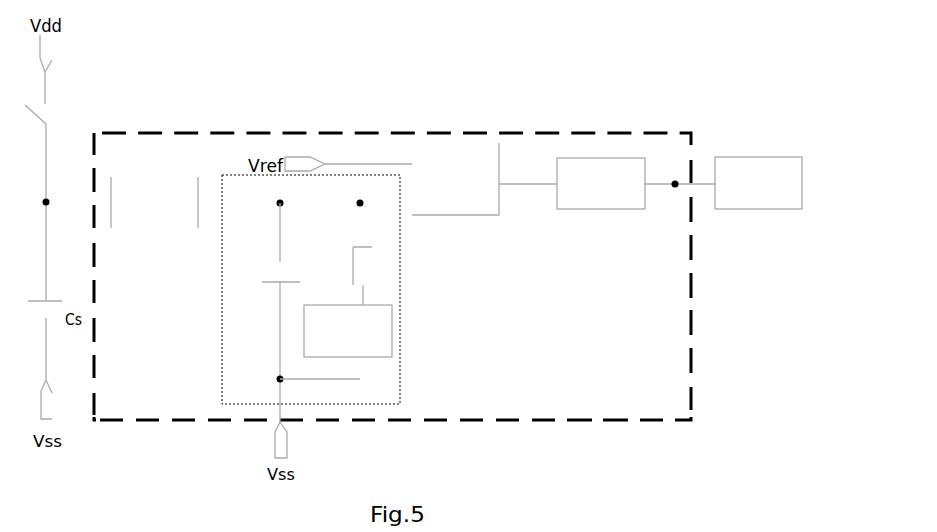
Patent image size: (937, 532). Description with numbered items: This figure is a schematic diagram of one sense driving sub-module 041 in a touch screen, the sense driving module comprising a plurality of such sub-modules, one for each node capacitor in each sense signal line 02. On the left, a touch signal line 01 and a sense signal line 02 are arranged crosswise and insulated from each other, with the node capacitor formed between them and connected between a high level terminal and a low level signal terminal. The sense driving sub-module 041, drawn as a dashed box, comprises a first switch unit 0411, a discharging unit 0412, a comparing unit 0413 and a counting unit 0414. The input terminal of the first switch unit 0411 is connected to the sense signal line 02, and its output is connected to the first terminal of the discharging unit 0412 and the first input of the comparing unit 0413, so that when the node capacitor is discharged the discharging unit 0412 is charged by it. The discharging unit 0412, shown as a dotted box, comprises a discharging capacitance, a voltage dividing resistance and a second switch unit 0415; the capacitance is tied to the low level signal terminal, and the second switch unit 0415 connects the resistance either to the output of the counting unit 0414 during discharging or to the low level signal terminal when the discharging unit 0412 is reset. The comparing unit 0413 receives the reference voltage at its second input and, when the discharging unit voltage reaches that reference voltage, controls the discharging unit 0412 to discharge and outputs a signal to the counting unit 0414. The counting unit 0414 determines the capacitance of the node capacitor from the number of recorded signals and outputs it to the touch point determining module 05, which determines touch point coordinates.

The touch signal line 01 is at (45, 273).
The sense signal line 02 is at (57, 202).
The sense driving sub-module 041 is at (588, 421).
The first switch unit 0411 is at (157, 178).
The discharging unit 0412 is at (344, 329).
The comparing unit 0413 is at (460, 143).
The counting unit 0414 is at (610, 158).
The second switch unit 0415 is at (378, 357).
The touch point determining module 05 is at (742, 157).